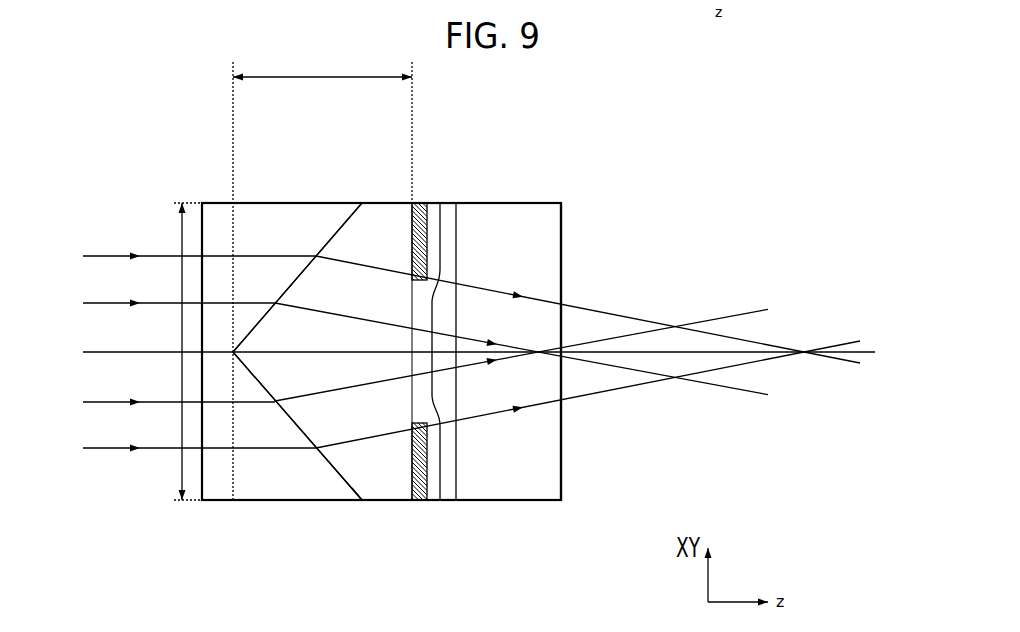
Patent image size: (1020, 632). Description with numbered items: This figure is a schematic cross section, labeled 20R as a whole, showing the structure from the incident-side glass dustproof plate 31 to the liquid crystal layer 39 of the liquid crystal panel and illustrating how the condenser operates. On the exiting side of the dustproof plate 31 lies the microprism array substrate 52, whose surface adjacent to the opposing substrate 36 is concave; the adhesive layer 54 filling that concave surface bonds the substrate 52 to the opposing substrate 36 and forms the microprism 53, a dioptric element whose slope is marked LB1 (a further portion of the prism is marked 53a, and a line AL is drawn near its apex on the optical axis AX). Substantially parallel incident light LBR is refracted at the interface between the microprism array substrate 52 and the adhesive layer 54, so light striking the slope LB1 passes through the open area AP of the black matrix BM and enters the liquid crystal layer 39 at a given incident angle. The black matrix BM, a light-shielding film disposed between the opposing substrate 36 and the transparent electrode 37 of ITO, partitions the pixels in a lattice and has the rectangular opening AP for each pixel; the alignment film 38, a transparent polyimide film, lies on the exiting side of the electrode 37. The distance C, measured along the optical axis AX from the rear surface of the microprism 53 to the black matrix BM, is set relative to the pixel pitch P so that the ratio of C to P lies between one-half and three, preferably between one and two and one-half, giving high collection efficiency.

The optical member (right side unit) 20R is at (222, 178).
The incident-side glass dustproof plate 31 is at (214, 500).
The microprism array substrate 52 is at (262, 500).
The microprism 53 is at (333, 470).
The prism inclined face 53a is at (322, 423).
The adhesive layer 54 is at (363, 493).
The opposing substrate 36 is at (390, 500).
The transparent electrode 37 is at (433, 203).
The alignment film 38 is at (448, 203).
The liquid crystal layer 39 is at (530, 500).
The black matrix BM is at (417, 500).
The open area AP is at (412, 280).
The optical axis AX is at (112, 352).
The apex line AL is at (262, 338).
The light LBR is at (110, 256).
The slope LB1 is at (338, 233).
The pixel pitch P is at (181, 379).
The distance C is at (322, 62).